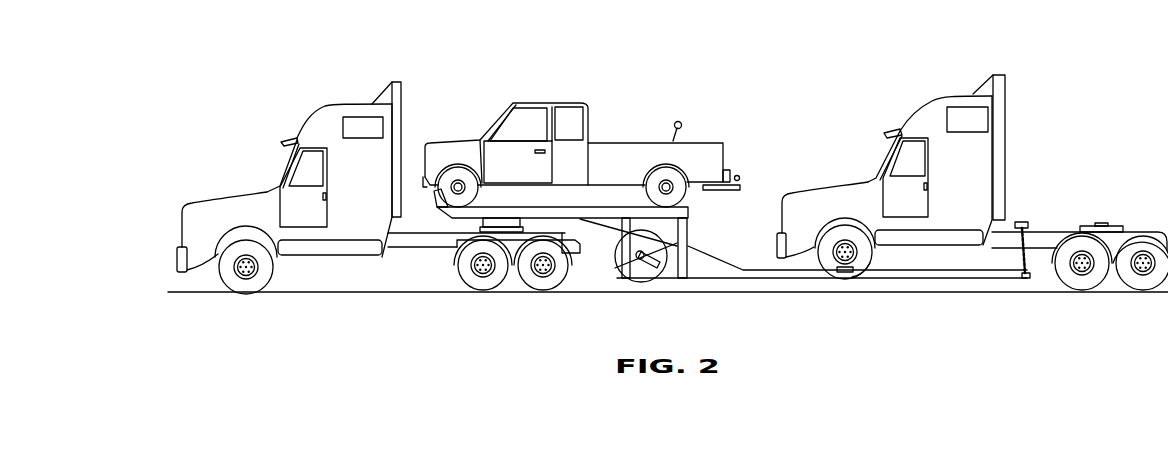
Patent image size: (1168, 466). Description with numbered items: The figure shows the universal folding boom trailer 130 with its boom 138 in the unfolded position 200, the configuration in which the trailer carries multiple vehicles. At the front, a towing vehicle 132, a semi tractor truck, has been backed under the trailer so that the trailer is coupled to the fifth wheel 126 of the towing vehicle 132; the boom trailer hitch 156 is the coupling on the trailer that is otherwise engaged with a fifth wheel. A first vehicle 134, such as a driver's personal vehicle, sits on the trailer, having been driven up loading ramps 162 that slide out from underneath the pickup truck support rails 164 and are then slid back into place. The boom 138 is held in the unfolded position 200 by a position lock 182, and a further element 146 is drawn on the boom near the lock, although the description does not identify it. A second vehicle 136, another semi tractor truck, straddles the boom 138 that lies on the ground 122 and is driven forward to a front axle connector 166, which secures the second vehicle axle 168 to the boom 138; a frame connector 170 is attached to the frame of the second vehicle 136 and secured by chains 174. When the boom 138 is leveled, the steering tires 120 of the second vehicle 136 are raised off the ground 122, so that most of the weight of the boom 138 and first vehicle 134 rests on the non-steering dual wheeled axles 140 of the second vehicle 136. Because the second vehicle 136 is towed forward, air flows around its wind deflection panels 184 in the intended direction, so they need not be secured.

The steering tires 120 is at (848, 225).
The ground 122 is at (277, 326).
The fifth wheel 126 is at (518, 234).
The universal folding boom trailer 130 is at (440, 62).
The towing vehicle 132 is at (283, 155).
The first vehicle 134 is at (723, 153).
The second vehicle 136 is at (927, 105).
The boom 138 is at (720, 255).
The dual wheeled axles 140 is at (1138, 287).
The locking mechanism 146 is at (648, 282).
The boom trailer hitch 156 is at (437, 208).
The loading ramps 162 is at (700, 212).
The pickup truck support rails 164 is at (572, 218).
The front axle connector 166 is at (842, 273).
The second vehicle axle 168 is at (865, 278).
The frame connector 170 is at (1057, 208).
The chains 174 is at (1022, 223).
The position lock 182 is at (622, 280).
The wind deflection panels 184 is at (1010, 90).
The unfolded position 200 is at (422, 325).